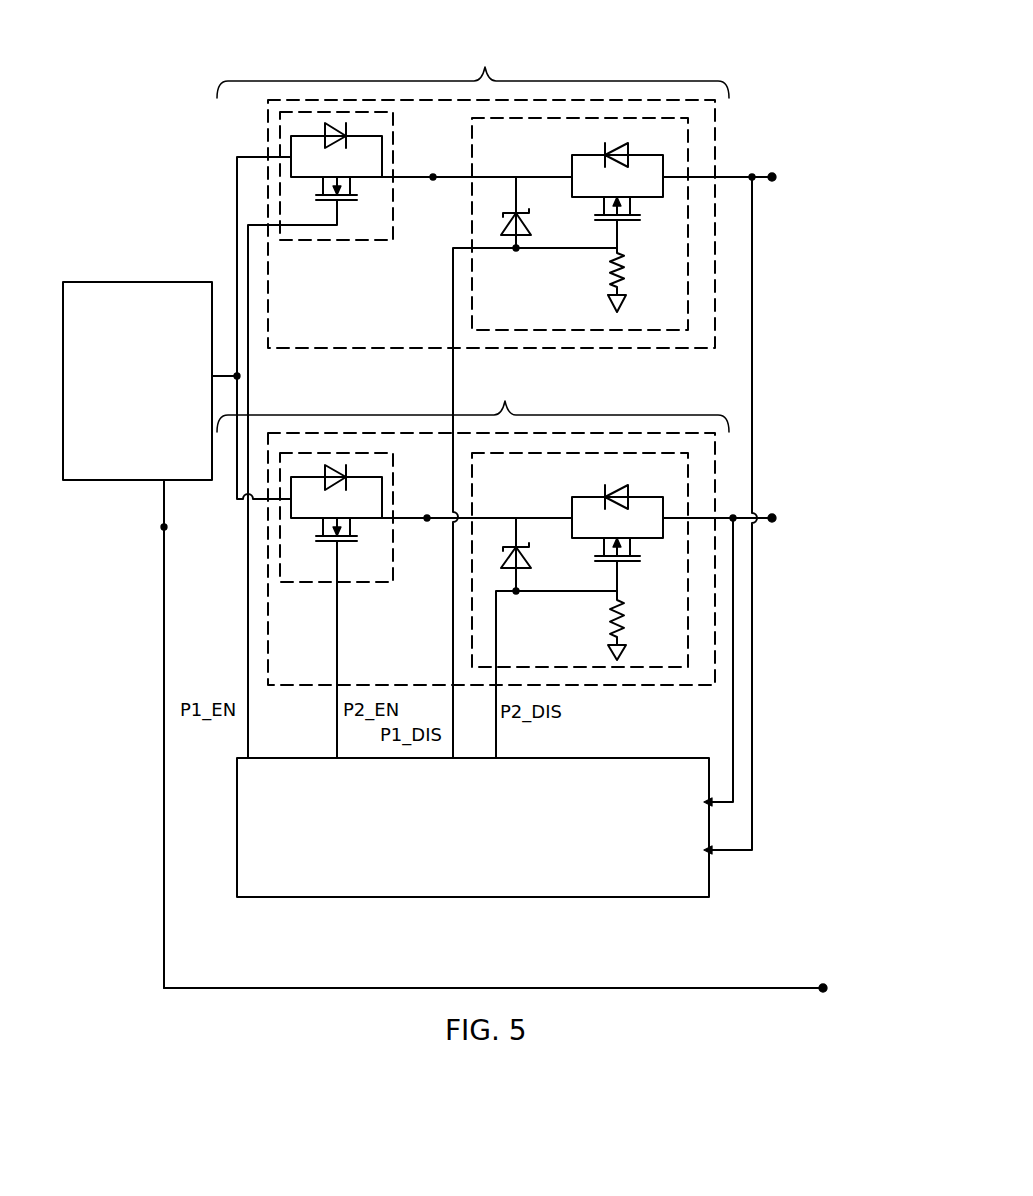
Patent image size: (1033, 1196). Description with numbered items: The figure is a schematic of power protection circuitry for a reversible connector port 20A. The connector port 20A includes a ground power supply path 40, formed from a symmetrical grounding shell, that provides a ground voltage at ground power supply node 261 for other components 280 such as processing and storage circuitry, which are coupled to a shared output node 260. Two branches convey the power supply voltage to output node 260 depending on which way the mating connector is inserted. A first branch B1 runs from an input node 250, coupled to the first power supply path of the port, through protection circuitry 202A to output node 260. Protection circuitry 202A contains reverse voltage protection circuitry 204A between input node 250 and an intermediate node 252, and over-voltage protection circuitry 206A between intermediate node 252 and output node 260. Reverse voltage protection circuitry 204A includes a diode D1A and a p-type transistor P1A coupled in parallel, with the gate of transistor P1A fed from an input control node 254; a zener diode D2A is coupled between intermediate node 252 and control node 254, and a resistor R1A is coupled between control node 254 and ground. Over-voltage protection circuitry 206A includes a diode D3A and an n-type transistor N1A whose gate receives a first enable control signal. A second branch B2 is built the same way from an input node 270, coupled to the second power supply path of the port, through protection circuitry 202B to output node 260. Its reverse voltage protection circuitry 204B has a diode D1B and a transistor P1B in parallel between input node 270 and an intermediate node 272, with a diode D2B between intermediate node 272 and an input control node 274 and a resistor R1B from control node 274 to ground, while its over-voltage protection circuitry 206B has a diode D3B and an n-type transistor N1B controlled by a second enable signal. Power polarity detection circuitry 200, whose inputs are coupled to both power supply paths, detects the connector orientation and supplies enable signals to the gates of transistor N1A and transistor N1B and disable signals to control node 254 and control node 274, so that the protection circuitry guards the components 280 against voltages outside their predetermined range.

The connector port 20A is at (745, 22).
The components 280 is at (165, 282).
The output node 260 is at (240, 368).
The ground power supply node 261 is at (167, 528).
The intermediate node 252 is at (432, 182).
The input node 250 is at (756, 180).
The input control node 254 is at (516, 251).
The over-voltage protection circuitry 206A is at (360, 241).
The reverse voltage protection circuitry 204A is at (565, 331).
The protection circuitry 202A is at (665, 349).
The intermediate node 272 is at (426, 522).
The input node 270 is at (733, 512).
The input control node 274 is at (516, 595).
The over-voltage protection circuitry 206B is at (362, 583).
The reverse voltage protection circuitry 204B is at (605, 668).
The protection circuitry 202B is at (665, 686).
The power polarity detection circuitry 200 is at (255, 898).
The ground power supply path 40 is at (822, 991).
The first branch B1 is at (473, 72).
The second branch B2 is at (473, 406).
The diode D3A is at (330, 149).
The n-type transistor N1A is at (348, 201).
The diode D1A is at (613, 160).
The diode D2A is at (533, 214).
The transistor P1A is at (642, 218).
The resistor R1A is at (626, 272).
The diode D3B is at (330, 491).
The n-type transistor N1B is at (348, 542).
The diode D1B is at (613, 502).
The diode D2B is at (533, 557).
The transistor P1B is at (642, 559).
The resistor R1B is at (627, 622).